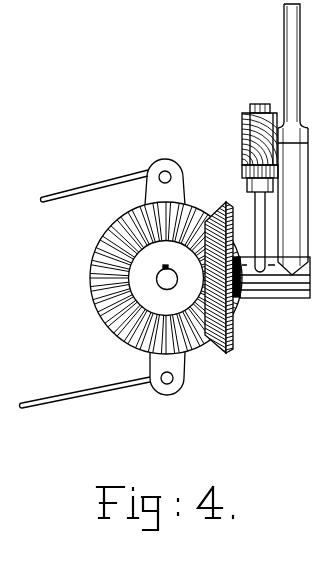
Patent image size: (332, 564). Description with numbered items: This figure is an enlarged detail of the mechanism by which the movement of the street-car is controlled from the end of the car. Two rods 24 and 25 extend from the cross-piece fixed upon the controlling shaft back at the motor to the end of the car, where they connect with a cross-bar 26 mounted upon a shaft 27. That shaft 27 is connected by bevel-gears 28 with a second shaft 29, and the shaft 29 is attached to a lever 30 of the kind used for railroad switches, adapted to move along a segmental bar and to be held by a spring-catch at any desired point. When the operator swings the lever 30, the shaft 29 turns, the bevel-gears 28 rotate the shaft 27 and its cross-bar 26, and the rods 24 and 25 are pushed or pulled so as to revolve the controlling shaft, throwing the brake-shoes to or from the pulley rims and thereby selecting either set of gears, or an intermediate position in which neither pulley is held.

The rod 24 is at (95, 186).
The rod 25 is at (85, 401).
The cross-bar 26 is at (170, 172).
The shaft 27 is at (160, 276).
The bevel-gears 28 is at (218, 204).
The shaft 29 is at (288, 300).
The lever 30 is at (290, 31).